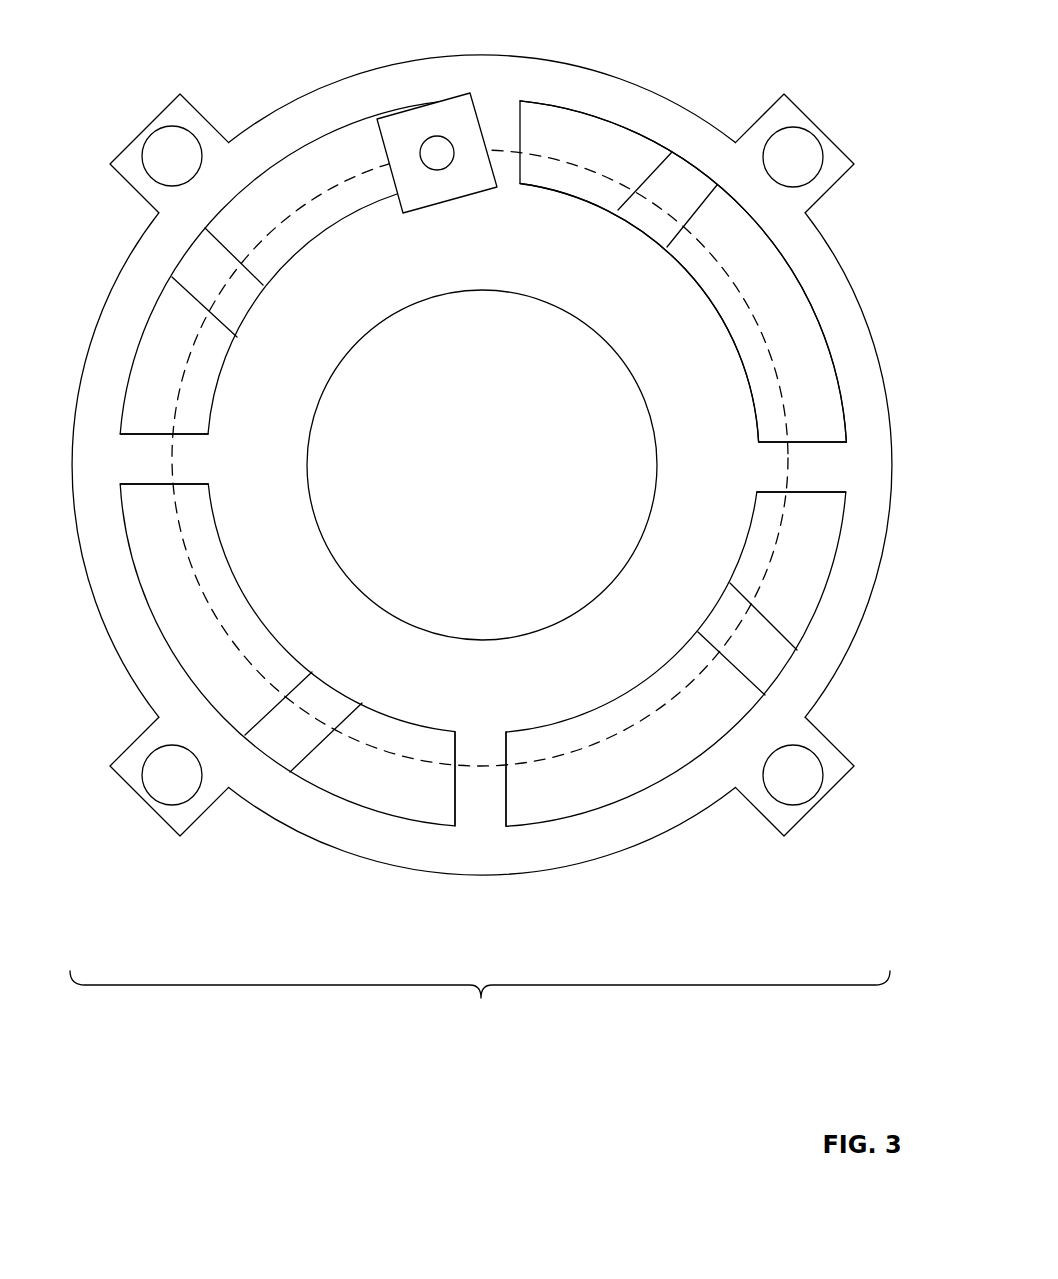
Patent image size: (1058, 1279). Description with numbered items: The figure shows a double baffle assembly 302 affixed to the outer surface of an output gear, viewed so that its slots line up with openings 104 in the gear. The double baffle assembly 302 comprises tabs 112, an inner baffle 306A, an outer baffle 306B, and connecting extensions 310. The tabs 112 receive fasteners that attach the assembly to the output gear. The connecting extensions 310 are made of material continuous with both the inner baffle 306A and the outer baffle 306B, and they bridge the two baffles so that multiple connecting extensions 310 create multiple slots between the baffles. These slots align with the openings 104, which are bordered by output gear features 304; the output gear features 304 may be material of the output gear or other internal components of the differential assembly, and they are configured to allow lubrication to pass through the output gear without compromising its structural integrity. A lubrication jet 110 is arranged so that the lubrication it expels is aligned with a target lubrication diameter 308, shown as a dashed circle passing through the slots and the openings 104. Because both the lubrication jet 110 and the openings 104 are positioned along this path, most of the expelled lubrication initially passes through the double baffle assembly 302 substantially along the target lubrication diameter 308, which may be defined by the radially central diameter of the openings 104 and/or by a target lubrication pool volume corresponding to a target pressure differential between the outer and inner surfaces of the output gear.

The openings 104 is at (821, 385).
The lubrication jet 110 is at (449, 121).
The tabs 112 is at (134, 105).
The double baffle assembly 302 is at (481, 998).
The output gear features 304 is at (245, 293).
The inner baffle 306A is at (681, 274).
The outer baffle 306B is at (802, 277).
The target lubrication diameter 308 is at (778, 557).
The connecting extensions 310 is at (197, 458).